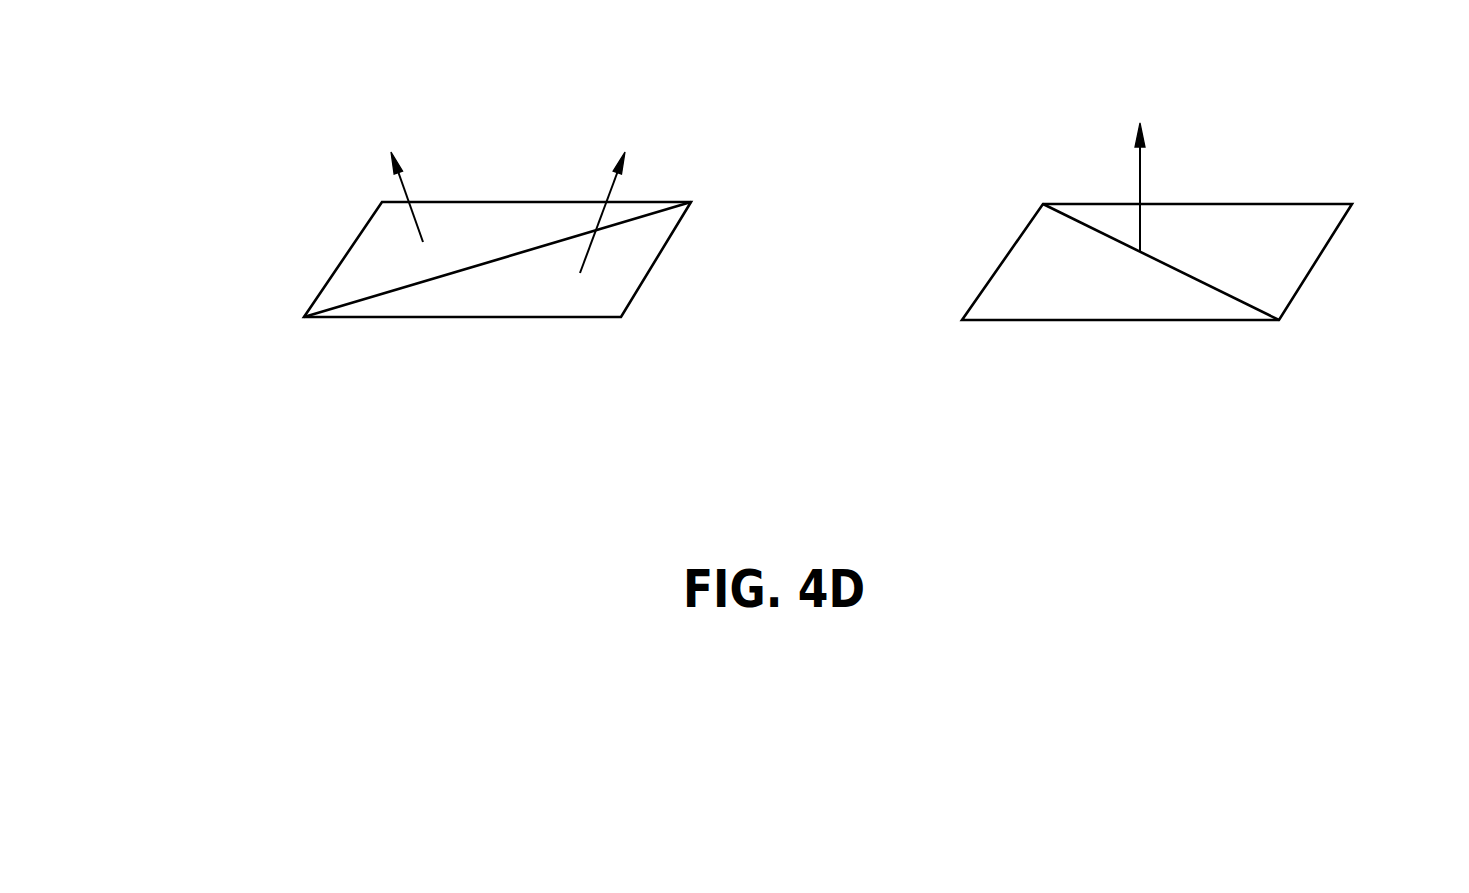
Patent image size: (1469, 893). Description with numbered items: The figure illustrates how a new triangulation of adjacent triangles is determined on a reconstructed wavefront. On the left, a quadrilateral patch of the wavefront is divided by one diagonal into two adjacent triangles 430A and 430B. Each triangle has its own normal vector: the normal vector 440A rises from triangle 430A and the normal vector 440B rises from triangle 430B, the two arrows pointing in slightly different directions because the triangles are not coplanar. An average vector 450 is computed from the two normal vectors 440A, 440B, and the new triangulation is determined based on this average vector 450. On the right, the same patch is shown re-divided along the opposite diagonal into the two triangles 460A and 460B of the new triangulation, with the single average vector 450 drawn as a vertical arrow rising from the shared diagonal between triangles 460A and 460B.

The adjacent triangle 430A is at (363, 270).
The adjacent triangle 430B is at (522, 290).
The normal vector 440A is at (383, 182).
The normal vector 440B is at (632, 170).
The average vector 450 is at (1129, 183).
The triangle of new triangulation 460A is at (1086, 270).
The triangle of new triangulation 460B is at (1253, 241).